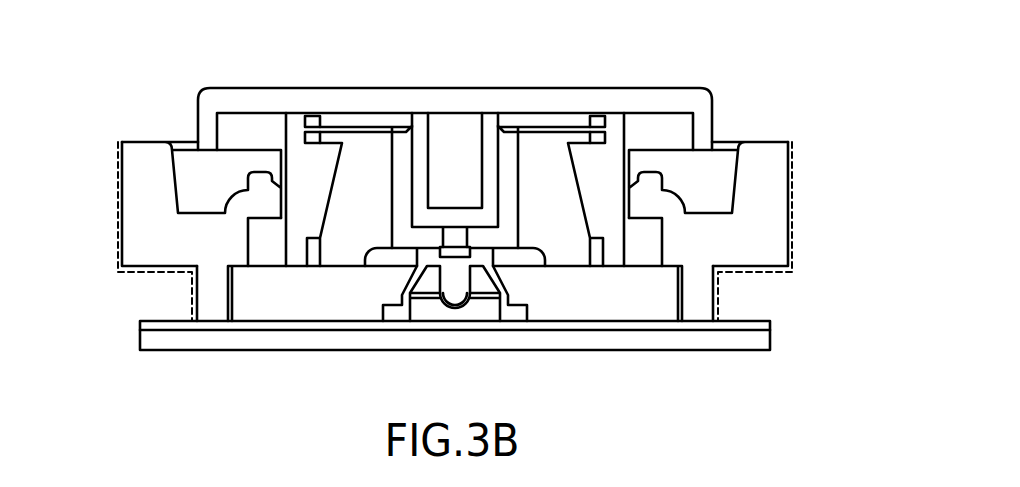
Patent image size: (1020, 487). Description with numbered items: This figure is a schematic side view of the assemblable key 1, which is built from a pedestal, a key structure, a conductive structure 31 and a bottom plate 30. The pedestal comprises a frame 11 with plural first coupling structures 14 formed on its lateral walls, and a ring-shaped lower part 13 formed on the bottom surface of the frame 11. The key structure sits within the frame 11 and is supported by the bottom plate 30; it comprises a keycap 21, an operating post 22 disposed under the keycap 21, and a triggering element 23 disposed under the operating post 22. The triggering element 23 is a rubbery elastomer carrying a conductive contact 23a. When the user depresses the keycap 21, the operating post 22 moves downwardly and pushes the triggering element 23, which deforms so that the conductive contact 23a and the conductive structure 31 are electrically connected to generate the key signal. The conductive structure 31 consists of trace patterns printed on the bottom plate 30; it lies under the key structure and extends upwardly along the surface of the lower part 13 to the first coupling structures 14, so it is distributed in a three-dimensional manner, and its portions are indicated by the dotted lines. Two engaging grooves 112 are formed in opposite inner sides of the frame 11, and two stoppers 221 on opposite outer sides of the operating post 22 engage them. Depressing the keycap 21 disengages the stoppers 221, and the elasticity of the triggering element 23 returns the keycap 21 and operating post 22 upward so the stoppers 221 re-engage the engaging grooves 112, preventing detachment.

The assemblable key 1 is at (687, 41).
The frame 11 is at (178, 140).
The engaging groove 112 is at (250, 225).
The lower part 13 is at (208, 310).
The first coupling structure 14 is at (138, 197).
The keycap 21 is at (412, 100).
The operating post 22 is at (507, 150).
The stopper 221 is at (317, 183).
The triggering element 23 is at (517, 315).
The conductive contact 23a is at (450, 297).
The bottom plate 30 is at (352, 340).
The conductive structure 31 is at (153, 268).